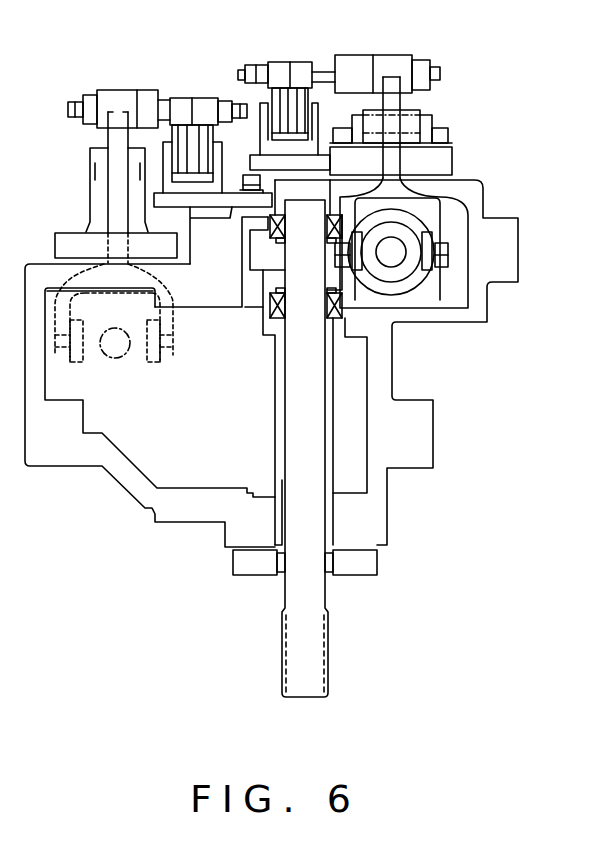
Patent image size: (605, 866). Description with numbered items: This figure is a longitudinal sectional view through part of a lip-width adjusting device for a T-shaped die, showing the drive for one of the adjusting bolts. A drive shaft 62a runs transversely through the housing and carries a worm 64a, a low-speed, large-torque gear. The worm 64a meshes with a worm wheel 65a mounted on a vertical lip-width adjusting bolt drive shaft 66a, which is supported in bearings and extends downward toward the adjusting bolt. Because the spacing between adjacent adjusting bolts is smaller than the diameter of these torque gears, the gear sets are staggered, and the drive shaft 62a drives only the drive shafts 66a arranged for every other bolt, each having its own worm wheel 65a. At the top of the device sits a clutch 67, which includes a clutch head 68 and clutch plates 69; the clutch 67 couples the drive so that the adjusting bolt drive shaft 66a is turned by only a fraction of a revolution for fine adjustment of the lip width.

The drive shaft 62a is at (393, 254).
The worm 64a is at (398, 288).
The worm wheel 65a is at (268, 255).
The lip-width adjusting bolt drive shaft 66a is at (305, 423).
The clutch 67 is at (108, 140).
The clutch head 68 is at (176, 99).
The clutch plate 69 is at (185, 140).